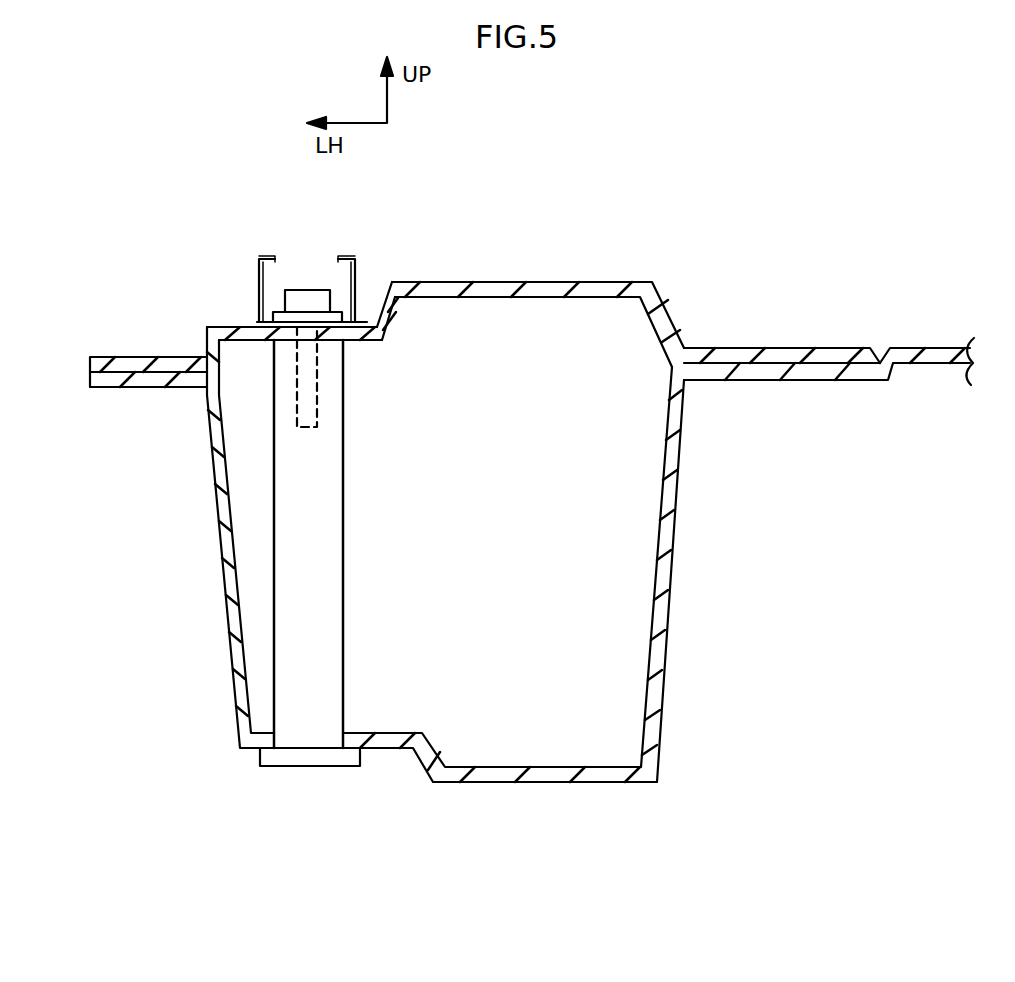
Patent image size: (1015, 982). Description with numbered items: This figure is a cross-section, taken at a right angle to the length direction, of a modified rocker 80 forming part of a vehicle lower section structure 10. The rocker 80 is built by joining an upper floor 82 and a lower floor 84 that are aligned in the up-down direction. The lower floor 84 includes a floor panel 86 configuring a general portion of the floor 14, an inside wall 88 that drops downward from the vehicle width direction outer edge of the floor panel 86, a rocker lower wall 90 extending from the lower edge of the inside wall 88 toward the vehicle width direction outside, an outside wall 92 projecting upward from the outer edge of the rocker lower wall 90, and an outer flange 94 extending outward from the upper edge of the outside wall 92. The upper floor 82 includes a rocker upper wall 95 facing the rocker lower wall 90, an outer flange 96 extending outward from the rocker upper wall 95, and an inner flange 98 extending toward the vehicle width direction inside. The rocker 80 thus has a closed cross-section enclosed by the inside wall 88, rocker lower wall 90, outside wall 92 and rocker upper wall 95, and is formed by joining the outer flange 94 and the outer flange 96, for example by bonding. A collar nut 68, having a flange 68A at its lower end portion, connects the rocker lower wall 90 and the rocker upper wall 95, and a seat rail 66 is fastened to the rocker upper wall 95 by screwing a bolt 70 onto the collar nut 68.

The rocker 80 is at (485, 508).
The vehicle battery mounting structure 10 is at (485, 508).
The upper floor 82 is at (672, 288).
The lower floor 84 is at (699, 574).
The floor panel 86 is at (829, 316).
The inside wall 88 is at (673, 548).
The rocker lower wall 90 is at (545, 777).
The outside wall 92 is at (227, 573).
The outer flange 94 is at (128, 384).
The rocker upper wall 95 is at (452, 293).
The outer flange 96 is at (165, 362).
The inner flange 98 is at (823, 356).
The floor 14 is at (905, 327).
The seat rail 66 is at (360, 247).
The collar nut 68 is at (331, 590).
The flange 68A is at (312, 757).
The bolt 70 is at (302, 290).